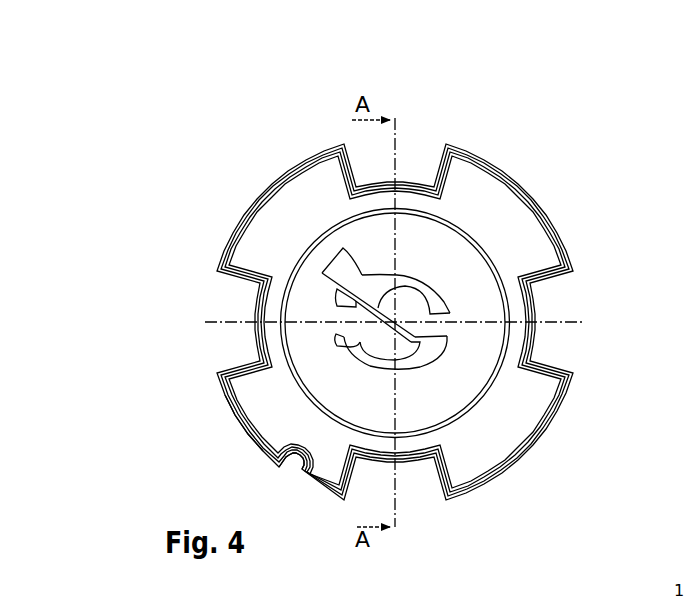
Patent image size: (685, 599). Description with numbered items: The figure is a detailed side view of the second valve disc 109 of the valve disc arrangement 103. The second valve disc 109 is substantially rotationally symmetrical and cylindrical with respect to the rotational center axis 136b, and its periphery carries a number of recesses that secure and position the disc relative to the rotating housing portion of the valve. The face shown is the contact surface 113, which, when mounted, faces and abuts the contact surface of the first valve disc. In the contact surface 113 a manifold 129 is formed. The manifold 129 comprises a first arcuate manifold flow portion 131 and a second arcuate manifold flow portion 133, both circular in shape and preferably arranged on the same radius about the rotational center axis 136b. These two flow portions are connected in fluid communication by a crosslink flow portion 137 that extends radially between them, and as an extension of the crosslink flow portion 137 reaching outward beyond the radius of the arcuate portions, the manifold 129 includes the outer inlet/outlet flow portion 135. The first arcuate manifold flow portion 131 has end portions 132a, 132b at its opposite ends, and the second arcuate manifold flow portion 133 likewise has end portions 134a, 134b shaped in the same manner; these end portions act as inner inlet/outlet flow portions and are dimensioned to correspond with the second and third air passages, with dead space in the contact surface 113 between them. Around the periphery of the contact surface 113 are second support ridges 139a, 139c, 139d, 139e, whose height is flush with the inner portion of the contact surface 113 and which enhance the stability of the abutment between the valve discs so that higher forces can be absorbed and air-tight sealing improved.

The valve disc arrangement 103 is at (588, 141).
The second valve disc 109 is at (232, 226).
The contact surface 113 is at (437, 246).
The manifold 129 is at (444, 376).
The first arcuate manifold flow portion 131 is at (441, 283).
The end portion 132a is at (454, 302).
The end portion 132b is at (340, 297).
The second arcuate manifold flow portion 133 is at (370, 365).
The end portion 134a is at (337, 342).
The end portion 134b is at (455, 341).
The outer inlet/outlet flow portion 135 is at (362, 248).
The rotational center axis 136b is at (341, 306).
The crosslink flow portion 137 is at (419, 327).
The second support ridge 139a is at (533, 223).
The second support ridge 139c is at (277, 200).
The second support ridge 139d is at (244, 404).
The second support ridge 139e is at (329, 486).